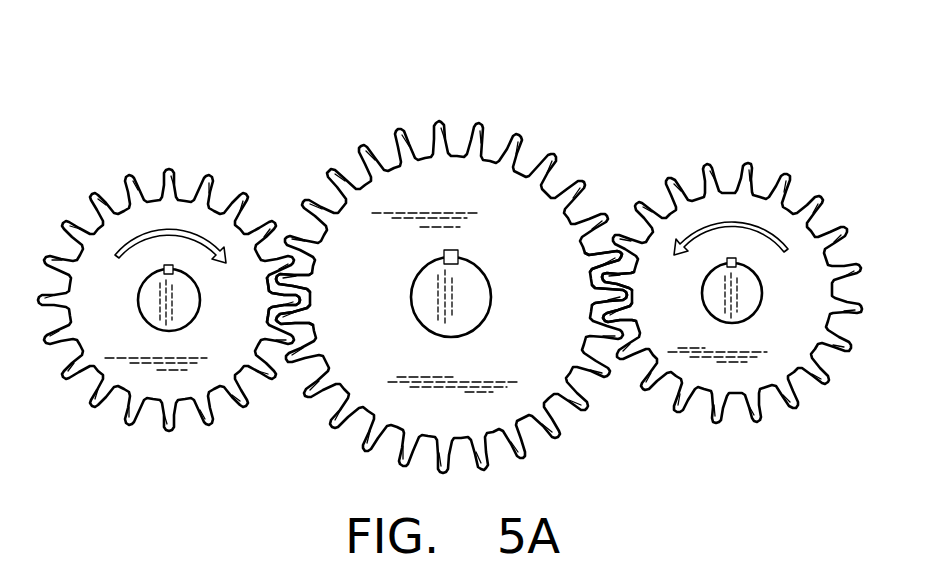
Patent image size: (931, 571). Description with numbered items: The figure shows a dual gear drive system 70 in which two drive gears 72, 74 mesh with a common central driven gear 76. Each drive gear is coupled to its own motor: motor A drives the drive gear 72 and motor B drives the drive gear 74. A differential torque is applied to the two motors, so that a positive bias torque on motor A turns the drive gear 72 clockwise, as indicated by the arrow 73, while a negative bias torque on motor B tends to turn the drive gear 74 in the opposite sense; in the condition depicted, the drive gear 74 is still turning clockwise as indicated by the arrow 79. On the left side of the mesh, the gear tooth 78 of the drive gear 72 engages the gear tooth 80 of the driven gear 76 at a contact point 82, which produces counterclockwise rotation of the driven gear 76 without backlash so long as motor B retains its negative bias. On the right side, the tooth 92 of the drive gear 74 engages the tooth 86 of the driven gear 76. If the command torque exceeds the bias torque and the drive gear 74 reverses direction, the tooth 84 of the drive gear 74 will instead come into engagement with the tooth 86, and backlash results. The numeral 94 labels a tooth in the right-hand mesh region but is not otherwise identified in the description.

The dual gear drive system 70 is at (604, 124).
The drive gear 72 is at (129, 165).
The arrow 73 is at (181, 228).
The drive gear 74 is at (786, 162).
The driven gear 76 is at (397, 122).
The gear tooth 78 is at (278, 301).
The arrow 79 is at (733, 222).
The gear tooth 80 is at (295, 317).
The contact point 82 is at (305, 290).
The tooth 84 is at (623, 317).
The tooth 86 is at (600, 297).
The tooth 92 is at (623, 281).
The tooth of second gear 94 is at (615, 277).